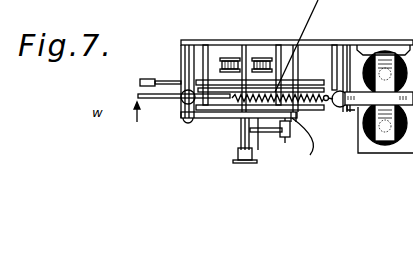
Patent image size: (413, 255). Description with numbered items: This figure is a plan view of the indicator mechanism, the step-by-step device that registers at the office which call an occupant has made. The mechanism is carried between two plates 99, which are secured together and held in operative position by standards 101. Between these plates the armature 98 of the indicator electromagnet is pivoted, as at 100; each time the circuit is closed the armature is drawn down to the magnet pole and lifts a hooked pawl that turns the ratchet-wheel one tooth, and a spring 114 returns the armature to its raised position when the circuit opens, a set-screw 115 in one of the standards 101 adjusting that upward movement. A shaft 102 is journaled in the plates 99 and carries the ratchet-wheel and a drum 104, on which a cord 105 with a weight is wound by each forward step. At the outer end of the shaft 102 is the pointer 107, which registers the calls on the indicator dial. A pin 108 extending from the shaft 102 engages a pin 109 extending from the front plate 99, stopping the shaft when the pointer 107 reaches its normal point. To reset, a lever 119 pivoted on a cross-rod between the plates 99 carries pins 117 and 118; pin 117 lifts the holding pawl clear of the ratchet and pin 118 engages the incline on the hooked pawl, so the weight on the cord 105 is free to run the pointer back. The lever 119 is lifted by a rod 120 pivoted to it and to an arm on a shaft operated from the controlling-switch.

The armature 98 is at (379, 99).
The plates 99 is at (336, 43).
The armature pivot 100 is at (298, 73).
The standards 101 is at (188, 54).
The shaft 102 is at (242, 140).
The drum 104 is at (268, 62).
The cord 105 is at (228, 58).
The pointer 107 is at (238, 165).
The pin 108 is at (310, 155).
The pin 109 is at (282, 140).
The spring 114 is at (235, 98).
The set-screw 115 is at (338, 108).
The pin 117 is at (258, 150).
The pin 118 is at (183, 116).
The lever 119 is at (163, 80).
The rod 120 is at (137, 86).